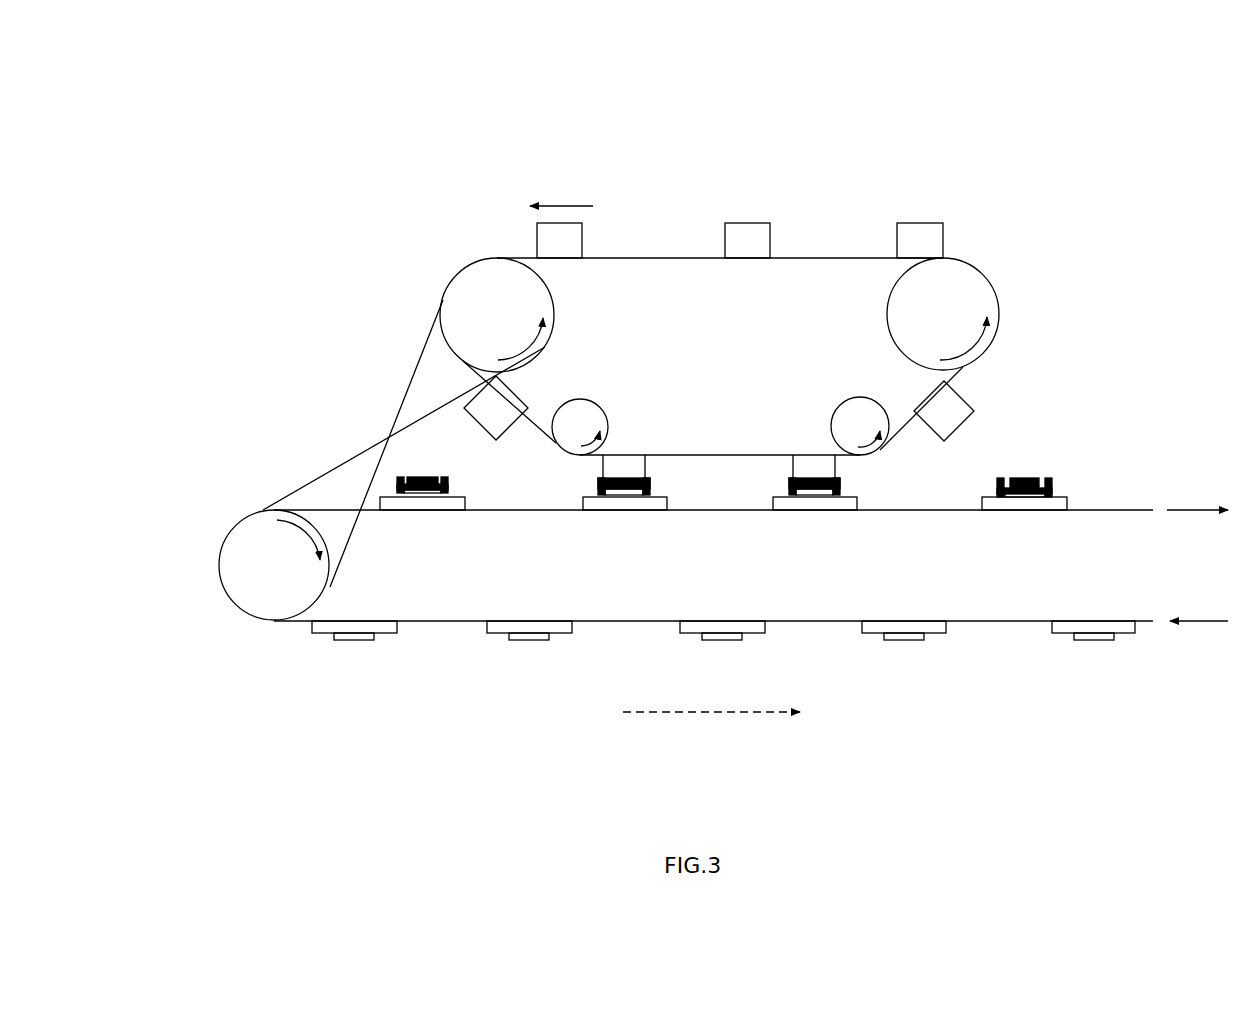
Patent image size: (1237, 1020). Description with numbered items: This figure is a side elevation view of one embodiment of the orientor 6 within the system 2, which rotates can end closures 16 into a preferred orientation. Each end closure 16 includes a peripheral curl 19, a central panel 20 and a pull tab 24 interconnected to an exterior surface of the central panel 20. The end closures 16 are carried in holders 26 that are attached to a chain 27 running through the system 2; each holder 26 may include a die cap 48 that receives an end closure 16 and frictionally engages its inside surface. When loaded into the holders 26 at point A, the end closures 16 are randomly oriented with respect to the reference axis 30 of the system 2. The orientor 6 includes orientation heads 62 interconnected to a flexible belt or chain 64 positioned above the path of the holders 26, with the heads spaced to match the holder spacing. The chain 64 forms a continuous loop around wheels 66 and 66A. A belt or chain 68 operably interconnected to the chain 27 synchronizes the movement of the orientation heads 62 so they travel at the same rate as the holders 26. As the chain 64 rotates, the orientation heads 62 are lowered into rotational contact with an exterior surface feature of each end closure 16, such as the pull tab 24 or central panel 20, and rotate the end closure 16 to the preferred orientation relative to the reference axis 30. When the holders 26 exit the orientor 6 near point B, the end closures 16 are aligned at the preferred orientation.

The system 2 is at (203, 140).
The orientor 6 is at (328, 222).
The end closure 16 is at (988, 485).
The peripheral curl 19 is at (998, 482).
The central panel 20 is at (1042, 480).
The pull tab 24 is at (1003, 478).
The holder 26 is at (1050, 505).
The chain 27 is at (1125, 510).
The reference axis 30 is at (660, 713).
The die cap 48 is at (1085, 641).
The orientation head 62 is at (603, 467).
The chain 64 is at (733, 452).
The wheel 66 is at (471, 288).
The wheel 66A is at (846, 412).
The chain 68 is at (407, 387).
The point A is at (478, 481).
The point B is at (1027, 431).